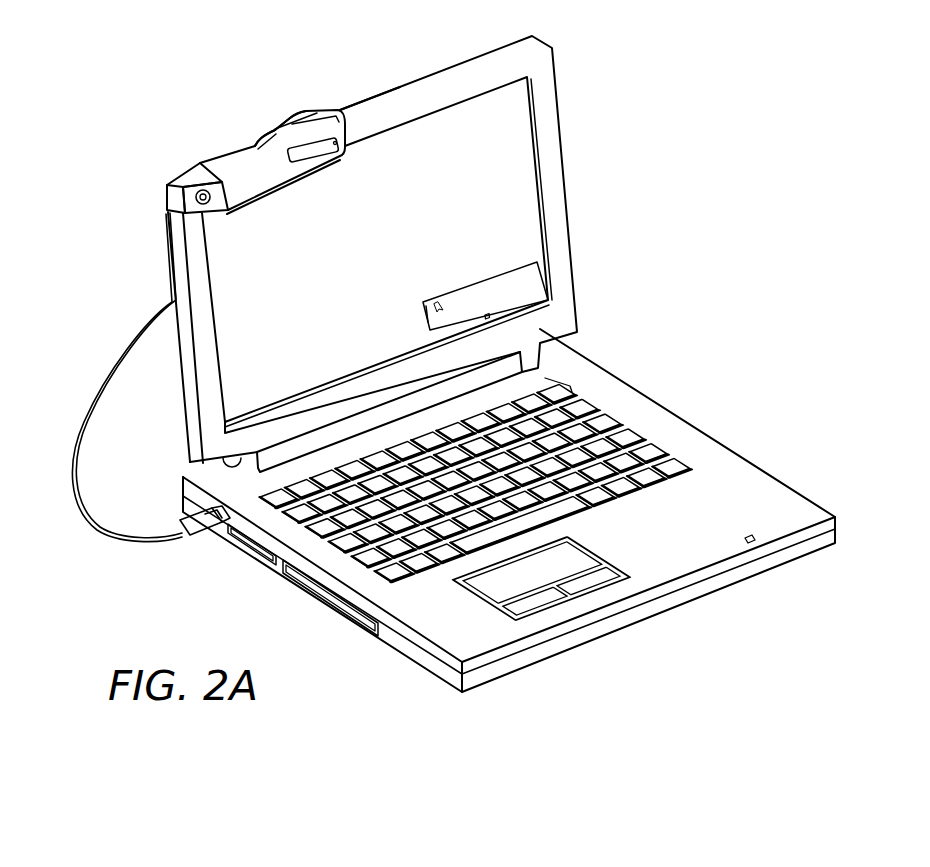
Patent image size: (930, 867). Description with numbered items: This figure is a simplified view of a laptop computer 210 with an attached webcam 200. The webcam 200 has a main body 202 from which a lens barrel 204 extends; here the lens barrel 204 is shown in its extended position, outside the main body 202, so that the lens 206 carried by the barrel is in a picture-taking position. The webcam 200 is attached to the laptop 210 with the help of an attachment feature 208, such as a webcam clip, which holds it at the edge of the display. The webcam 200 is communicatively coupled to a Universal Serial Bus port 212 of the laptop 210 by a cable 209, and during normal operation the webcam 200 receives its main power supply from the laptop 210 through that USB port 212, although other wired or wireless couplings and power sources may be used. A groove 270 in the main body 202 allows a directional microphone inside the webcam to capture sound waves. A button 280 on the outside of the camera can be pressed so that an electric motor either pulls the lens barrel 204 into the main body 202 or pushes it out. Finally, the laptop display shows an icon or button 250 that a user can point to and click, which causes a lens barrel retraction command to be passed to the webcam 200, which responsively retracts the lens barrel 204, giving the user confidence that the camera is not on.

The webcam 200 is at (254, 156).
The main body 202 is at (330, 106).
The lens barrel 204 is at (172, 200).
The lens 206 is at (183, 180).
The attachment feature 208 is at (265, 128).
The cable 209 is at (97, 503).
The laptop computer 210 is at (566, 157).
The USB port 212 is at (218, 532).
The icon or button 250 is at (532, 275).
The groove 270 is at (348, 132).
The button 280 is at (310, 113).